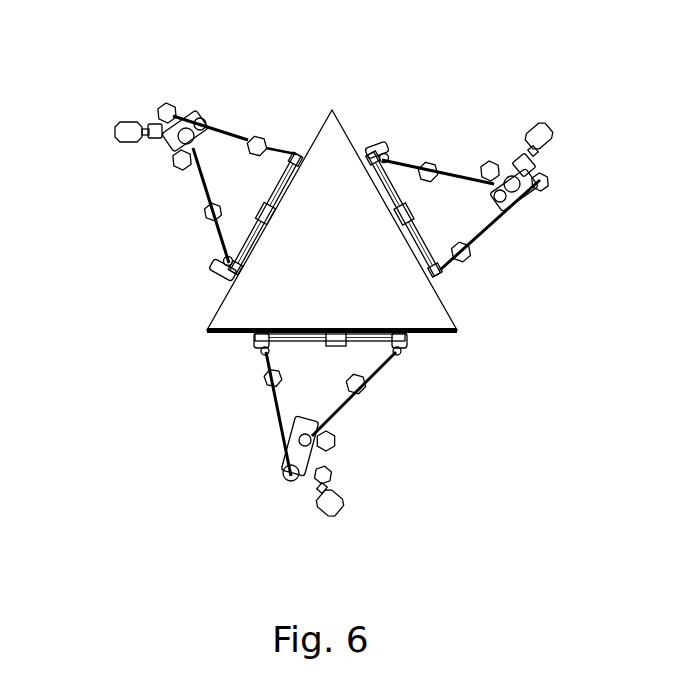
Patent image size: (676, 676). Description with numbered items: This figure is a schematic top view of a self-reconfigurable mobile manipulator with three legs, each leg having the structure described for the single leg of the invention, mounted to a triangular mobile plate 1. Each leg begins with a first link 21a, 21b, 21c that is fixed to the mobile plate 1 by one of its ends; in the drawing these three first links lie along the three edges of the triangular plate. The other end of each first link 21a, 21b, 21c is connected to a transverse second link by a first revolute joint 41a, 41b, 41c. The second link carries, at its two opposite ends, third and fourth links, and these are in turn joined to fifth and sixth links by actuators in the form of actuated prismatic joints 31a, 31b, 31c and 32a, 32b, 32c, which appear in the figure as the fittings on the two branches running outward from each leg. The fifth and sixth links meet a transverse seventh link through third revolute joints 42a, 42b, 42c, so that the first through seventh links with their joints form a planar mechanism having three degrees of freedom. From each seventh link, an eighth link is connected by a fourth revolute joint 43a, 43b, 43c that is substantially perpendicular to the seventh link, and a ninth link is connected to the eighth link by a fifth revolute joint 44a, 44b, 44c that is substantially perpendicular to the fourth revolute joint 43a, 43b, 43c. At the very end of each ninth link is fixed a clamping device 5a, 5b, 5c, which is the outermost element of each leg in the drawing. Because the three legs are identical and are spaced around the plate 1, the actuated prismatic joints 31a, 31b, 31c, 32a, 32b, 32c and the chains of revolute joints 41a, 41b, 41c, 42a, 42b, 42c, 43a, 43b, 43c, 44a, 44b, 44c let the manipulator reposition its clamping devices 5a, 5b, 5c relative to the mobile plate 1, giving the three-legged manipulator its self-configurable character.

The mobile plate 1 is at (426, 317).
The first link 21a is at (332, 334).
The first link 21b is at (402, 217).
The first link 21c is at (266, 212).
The actuated prismatic joint 31a is at (265, 385).
The actuated prismatic joint 31b is at (470, 255).
The actuated prismatic joint 31c is at (256, 136).
The actuated prismatic joint 32a is at (362, 394).
The actuated prismatic joint 32b is at (433, 162).
The actuated prismatic joint 32c is at (205, 213).
The first revolute joint 41a is at (350, 345).
The first revolute joint 41b is at (399, 202).
The first revolute joint 41c is at (256, 224).
The third revolute joint 42a is at (288, 436).
The third revolute joint 42b is at (512, 204).
The third revolute joint 42c is at (200, 124).
The fourth revolute joint 43a is at (332, 449).
The fourth revolute joint 43b is at (497, 165).
The fourth revolute joint 43c is at (172, 156).
The fifth revolute joint 44a is at (335, 480).
The fifth revolute joint 44b is at (548, 183).
The fifth revolute joint 44c is at (160, 112).
The clamping device 5a is at (318, 505).
The clamping device 5b is at (553, 136).
The clamping device 5c is at (115, 128).